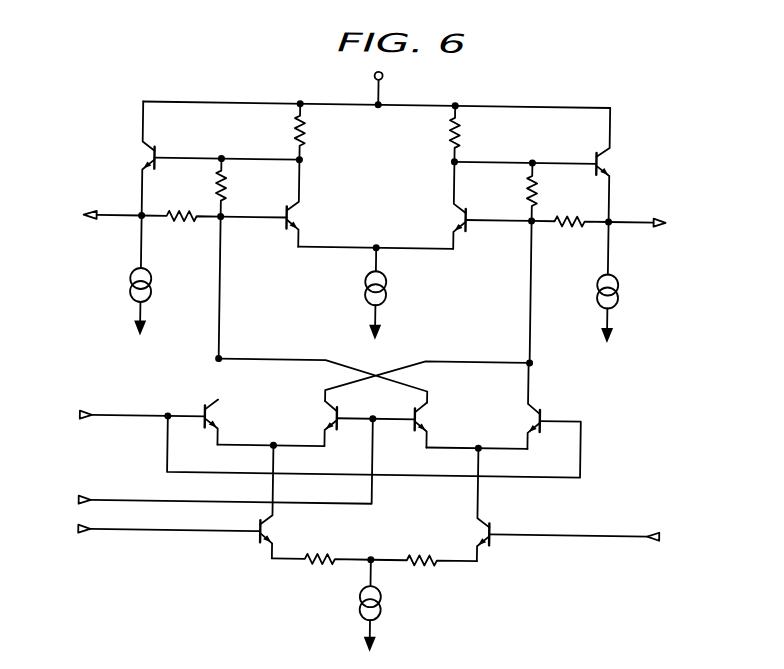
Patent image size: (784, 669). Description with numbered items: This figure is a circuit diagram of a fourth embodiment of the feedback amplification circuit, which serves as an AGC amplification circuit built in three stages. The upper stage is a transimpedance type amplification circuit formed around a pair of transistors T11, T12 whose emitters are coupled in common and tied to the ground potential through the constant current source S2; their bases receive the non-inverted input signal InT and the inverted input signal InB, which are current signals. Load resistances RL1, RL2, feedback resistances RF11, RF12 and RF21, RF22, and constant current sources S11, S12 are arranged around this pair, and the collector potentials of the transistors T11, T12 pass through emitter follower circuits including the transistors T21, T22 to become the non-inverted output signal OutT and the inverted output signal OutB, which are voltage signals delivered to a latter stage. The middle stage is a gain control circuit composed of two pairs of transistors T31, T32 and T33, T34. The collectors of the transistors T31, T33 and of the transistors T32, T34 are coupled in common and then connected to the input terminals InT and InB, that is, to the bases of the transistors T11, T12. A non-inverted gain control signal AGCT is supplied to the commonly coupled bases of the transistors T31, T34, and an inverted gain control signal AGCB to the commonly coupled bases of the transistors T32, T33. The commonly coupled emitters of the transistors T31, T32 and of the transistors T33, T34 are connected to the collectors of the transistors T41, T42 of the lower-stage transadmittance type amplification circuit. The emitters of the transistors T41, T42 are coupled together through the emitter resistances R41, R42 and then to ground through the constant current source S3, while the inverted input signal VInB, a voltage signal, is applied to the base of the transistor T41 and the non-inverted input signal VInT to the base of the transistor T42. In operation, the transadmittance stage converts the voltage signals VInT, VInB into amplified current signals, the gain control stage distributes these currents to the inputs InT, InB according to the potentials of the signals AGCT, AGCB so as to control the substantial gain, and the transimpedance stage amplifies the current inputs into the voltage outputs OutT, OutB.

The transistor T21 is at (126, 158).
The transistor T22 is at (627, 165).
The transistor T11 is at (312, 204).
The transistor T12 is at (438, 205).
The transistor T31 is at (196, 410).
The transistor T32 is at (307, 423).
The transistor T33 is at (443, 425).
The transistor T34 is at (552, 406).
The transistor T41 is at (245, 508).
The transistor T42 is at (504, 513).
The load resistance RL1 is at (274, 131).
The load resistance RL2 is at (477, 134).
The feedback resistance RF11 is at (248, 188).
The feedback resistance RF12 is at (503, 191).
The feedback resistance RF21 is at (181, 232).
The feedback resistance RF22 is at (570, 240).
The emitter resistance R41 is at (321, 545).
The emitter resistance R42 is at (424, 546).
The constant current source S11 is at (159, 275).
The constant current source S12 is at (626, 283).
The constant current source S2 is at (392, 294).
The constant current source S3 is at (386, 606).
The inverted output signal OutB is at (81, 217).
The non-inverted output signal OutT is at (669, 226).
The non-inverted input signal InT is at (239, 288).
The inverted input signal InB is at (508, 291).
The non-inverted gain control signal AGCT is at (108, 419).
The inverted gain control signal AGCB is at (191, 468).
The inverted input signal VInB is at (135, 532).
The non-inverted input signal VInT is at (603, 541).